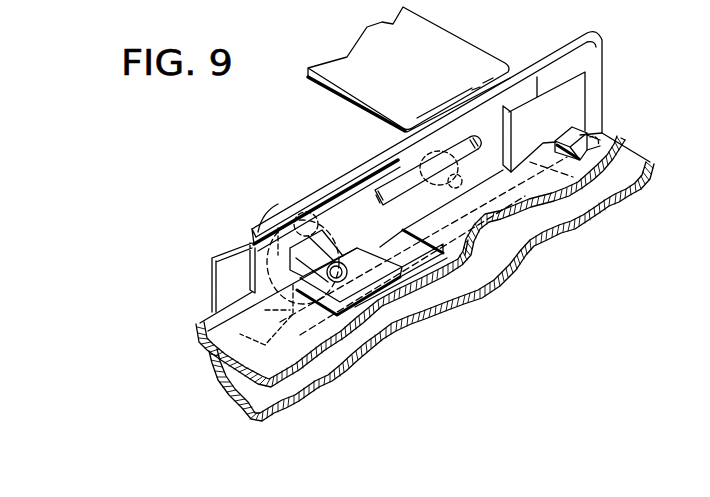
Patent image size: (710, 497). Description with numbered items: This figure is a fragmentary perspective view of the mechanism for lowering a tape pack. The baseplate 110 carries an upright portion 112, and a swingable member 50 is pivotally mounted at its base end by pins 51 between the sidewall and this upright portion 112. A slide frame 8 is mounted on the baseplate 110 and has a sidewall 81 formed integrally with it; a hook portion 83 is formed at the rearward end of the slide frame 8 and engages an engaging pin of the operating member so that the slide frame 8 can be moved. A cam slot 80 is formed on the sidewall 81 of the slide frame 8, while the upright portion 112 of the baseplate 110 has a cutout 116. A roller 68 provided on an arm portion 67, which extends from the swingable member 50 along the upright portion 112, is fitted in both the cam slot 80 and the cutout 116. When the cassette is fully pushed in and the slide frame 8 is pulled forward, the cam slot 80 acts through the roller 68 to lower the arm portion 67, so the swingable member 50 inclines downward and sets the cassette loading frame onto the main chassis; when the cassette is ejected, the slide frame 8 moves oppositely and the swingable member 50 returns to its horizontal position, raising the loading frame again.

The slide frame 8 is at (312, 350).
The swingable member 50 is at (445, 40).
The pins 51 is at (387, 145).
The arm portion 67 is at (273, 212).
The roller 68 is at (306, 211).
The cam slot 80 is at (347, 243).
The sidewall 81 is at (353, 198).
The hook portion 83 is at (600, 133).
The baseplate 110 is at (458, 293).
The upright portion 112 is at (232, 268).
The cutout 116 is at (222, 303).